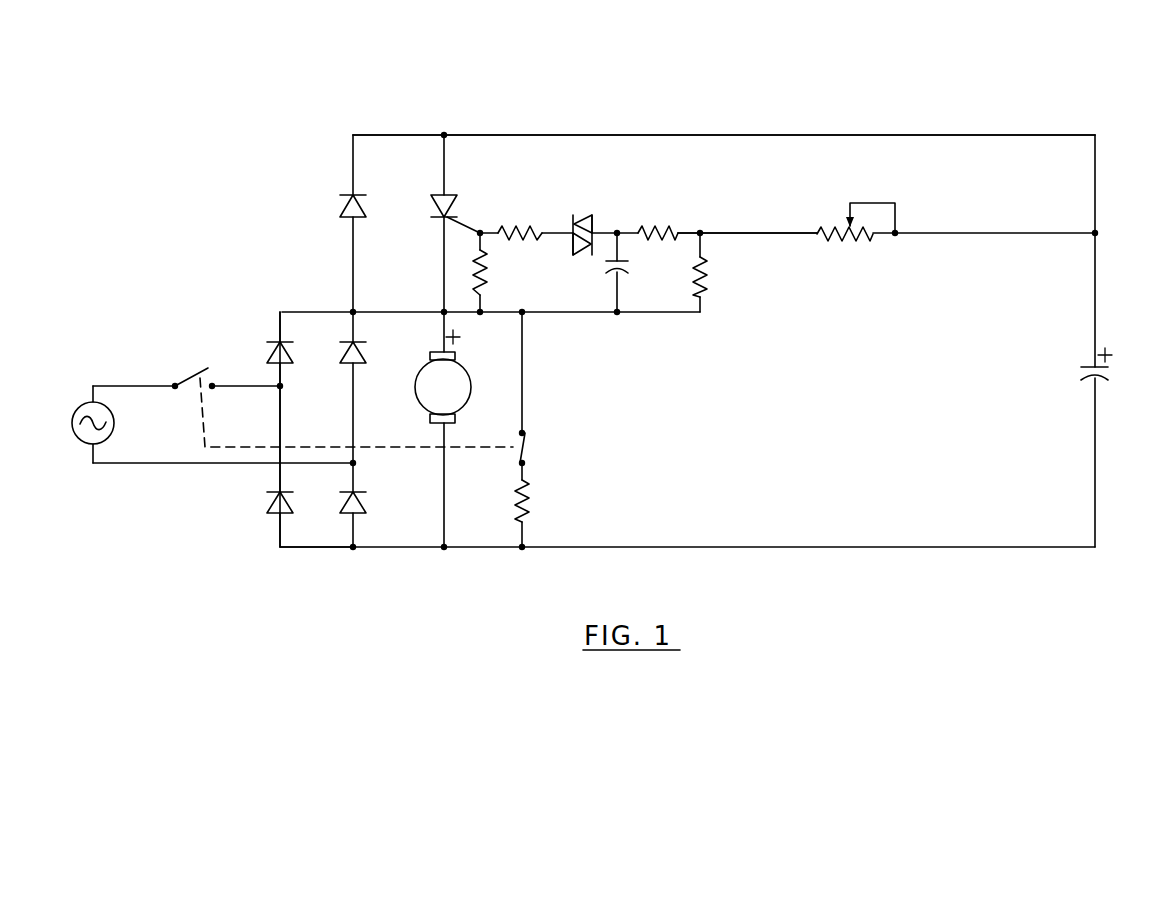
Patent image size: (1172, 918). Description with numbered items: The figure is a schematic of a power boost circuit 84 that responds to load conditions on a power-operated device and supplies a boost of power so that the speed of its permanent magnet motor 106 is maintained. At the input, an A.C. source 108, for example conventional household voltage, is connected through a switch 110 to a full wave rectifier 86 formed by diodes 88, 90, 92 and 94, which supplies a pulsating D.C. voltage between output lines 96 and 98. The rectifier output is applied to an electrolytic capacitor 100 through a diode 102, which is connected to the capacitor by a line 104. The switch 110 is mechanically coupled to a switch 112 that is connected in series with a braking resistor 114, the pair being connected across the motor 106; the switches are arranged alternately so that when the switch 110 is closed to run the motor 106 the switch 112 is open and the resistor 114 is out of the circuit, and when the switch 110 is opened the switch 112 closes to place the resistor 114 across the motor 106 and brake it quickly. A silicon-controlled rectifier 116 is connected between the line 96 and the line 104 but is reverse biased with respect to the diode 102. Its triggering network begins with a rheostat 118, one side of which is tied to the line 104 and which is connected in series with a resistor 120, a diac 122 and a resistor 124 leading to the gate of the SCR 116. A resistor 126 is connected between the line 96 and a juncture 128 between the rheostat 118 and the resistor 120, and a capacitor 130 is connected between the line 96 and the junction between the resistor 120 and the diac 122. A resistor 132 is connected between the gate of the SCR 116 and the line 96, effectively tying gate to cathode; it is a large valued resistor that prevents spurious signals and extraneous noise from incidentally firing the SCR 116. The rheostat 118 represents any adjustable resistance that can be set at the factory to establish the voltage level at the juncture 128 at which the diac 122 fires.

The power boost circuit 84 is at (539, 88).
The full wave rectifier 86 is at (250, 544).
The diode 88 is at (268, 501).
The diode 90 is at (277, 352).
The diode 92 is at (367, 506).
The diode 94 is at (366, 357).
The output line 96 is at (388, 312).
The output line 98 is at (480, 548).
The electrolytic capacitor 100 is at (1099, 380).
The diode 102 is at (344, 210).
The line 104 is at (680, 135).
The motor 106 is at (455, 389).
The A.C. source 108 is at (88, 445).
The switch 110 is at (205, 376).
The switch 112 is at (527, 440).
The braking resistor 114 is at (528, 500).
The silicon-controlled rectifier 116 is at (437, 205).
The rheostat 118 is at (848, 242).
The resistor 120 is at (652, 232).
The diac 122 is at (586, 216).
The resistor 124 is at (508, 231).
The resistor 126 is at (704, 268).
The juncture 128 is at (701, 232).
The capacitor 130 is at (623, 275).
The resistor 132 is at (486, 283).